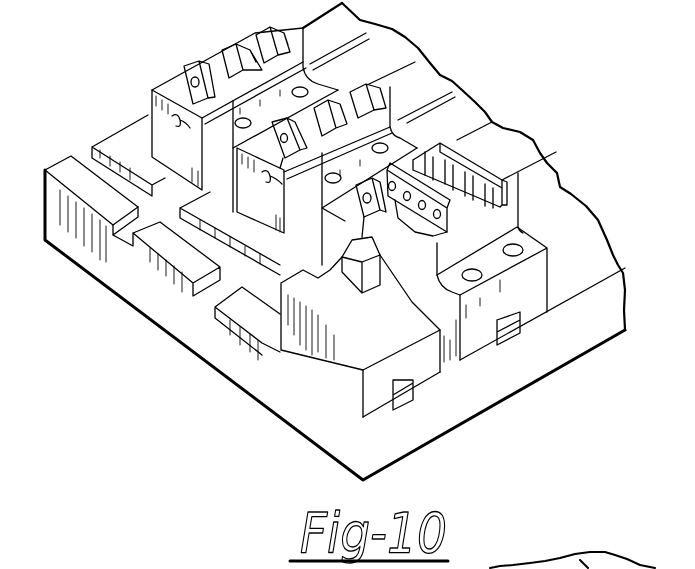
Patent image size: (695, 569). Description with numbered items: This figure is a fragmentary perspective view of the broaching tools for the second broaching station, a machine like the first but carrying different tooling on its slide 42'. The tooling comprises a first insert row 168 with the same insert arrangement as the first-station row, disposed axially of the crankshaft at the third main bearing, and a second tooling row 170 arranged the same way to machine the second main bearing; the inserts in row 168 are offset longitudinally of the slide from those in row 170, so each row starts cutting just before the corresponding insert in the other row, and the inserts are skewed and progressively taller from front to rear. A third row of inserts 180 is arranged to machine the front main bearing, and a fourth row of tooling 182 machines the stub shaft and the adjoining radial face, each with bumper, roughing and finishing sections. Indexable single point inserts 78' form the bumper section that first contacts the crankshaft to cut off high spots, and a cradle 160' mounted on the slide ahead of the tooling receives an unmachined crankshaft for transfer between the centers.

The slide 42' is at (335, 241).
The cradle 160' is at (418, 269).
The first insert row 168 is at (260, 96).
The second tooling row 170 is at (344, 163).
The indexable single point insert 78' is at (153, 65).
The third row of inserts 180 is at (365, 217).
The fourth row of tooling 182 is at (410, 212).